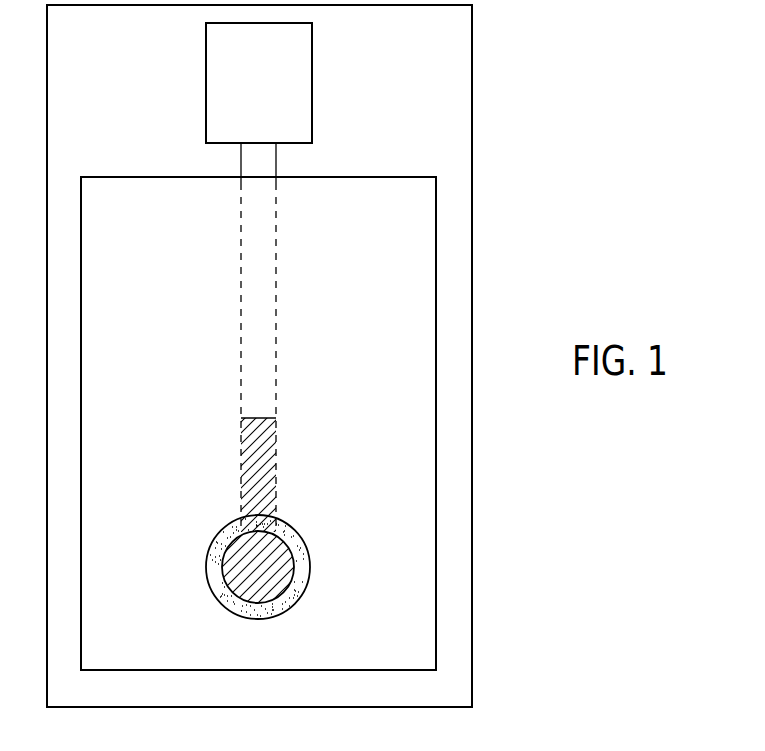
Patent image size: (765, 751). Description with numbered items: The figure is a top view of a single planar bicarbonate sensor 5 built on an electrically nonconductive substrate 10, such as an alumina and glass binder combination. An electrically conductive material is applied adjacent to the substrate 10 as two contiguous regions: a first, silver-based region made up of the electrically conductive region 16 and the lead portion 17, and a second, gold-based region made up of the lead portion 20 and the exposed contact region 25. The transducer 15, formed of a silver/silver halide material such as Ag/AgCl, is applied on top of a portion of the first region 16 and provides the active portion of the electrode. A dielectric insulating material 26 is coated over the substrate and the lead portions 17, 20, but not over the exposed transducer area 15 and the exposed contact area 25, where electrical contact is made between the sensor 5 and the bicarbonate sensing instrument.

The bicarbonate sensor 5 is at (503, 55).
The electrically nonconductive substrate base support 10 is at (472, 630).
The dielectric insulating material 26 is at (373, 267).
The exposed contact region 25 is at (275, 92).
The second region lead portion 20 is at (240, 379).
The first region lead portion 17 is at (263, 440).
The transducer 15 is at (307, 540).
The electrically conductive region 16 is at (222, 557).